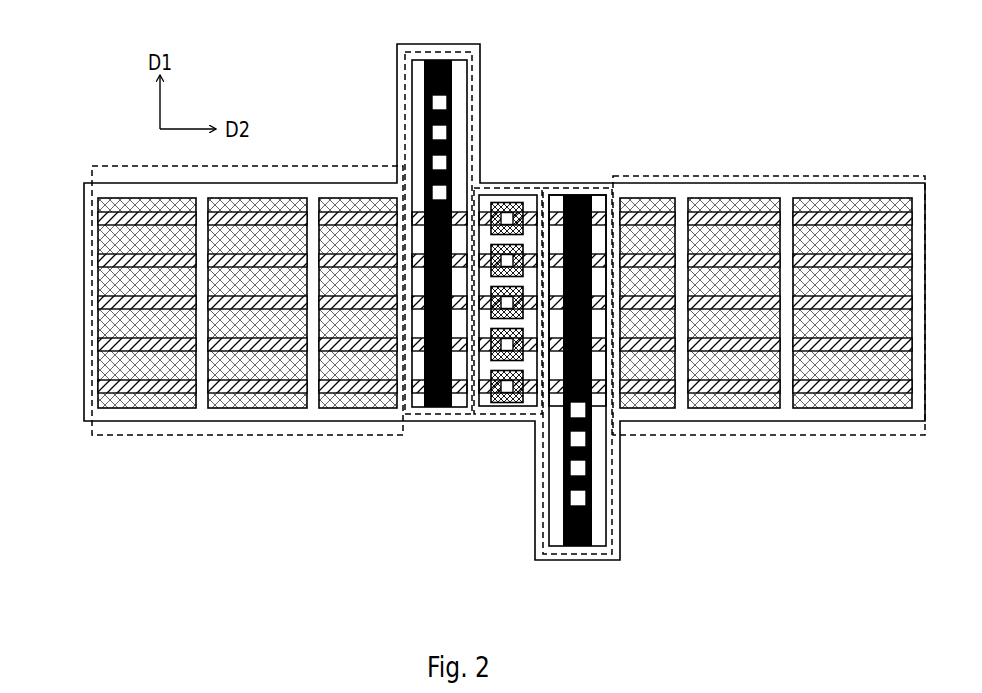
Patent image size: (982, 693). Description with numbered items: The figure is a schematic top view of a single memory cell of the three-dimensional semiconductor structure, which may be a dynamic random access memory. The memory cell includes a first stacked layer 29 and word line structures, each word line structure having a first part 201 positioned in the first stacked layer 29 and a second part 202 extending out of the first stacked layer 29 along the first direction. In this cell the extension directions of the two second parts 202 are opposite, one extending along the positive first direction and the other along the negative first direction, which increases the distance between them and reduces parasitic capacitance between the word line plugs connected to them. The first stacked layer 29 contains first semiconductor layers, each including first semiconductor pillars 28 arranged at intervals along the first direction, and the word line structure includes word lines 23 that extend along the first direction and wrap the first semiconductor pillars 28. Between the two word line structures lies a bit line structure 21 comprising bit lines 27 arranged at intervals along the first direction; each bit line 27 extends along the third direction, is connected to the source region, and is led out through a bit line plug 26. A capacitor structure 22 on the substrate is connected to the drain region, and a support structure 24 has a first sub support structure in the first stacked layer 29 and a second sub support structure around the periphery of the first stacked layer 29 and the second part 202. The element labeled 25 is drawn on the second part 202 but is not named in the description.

The bit line structure 21 is at (522, 187).
The capacitor structure 22 is at (250, 435).
The word lines 23 is at (580, 547).
The support structure 24 is at (788, 196).
The via hole 25 is at (581, 501).
The bit line plug 26 is at (506, 387).
The bit lines 27 is at (506, 398).
The first semiconductor pillars 28 is at (603, 187).
The first stacked layer 29 is at (80, 198).
The first part 201 is at (558, 188).
The second part 202 is at (406, 97).